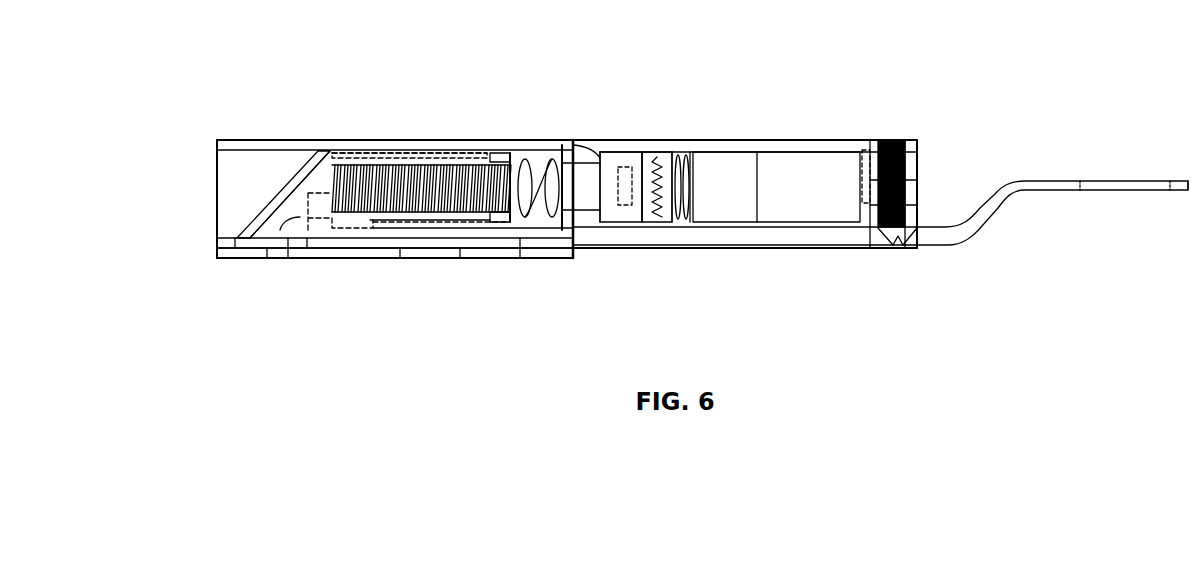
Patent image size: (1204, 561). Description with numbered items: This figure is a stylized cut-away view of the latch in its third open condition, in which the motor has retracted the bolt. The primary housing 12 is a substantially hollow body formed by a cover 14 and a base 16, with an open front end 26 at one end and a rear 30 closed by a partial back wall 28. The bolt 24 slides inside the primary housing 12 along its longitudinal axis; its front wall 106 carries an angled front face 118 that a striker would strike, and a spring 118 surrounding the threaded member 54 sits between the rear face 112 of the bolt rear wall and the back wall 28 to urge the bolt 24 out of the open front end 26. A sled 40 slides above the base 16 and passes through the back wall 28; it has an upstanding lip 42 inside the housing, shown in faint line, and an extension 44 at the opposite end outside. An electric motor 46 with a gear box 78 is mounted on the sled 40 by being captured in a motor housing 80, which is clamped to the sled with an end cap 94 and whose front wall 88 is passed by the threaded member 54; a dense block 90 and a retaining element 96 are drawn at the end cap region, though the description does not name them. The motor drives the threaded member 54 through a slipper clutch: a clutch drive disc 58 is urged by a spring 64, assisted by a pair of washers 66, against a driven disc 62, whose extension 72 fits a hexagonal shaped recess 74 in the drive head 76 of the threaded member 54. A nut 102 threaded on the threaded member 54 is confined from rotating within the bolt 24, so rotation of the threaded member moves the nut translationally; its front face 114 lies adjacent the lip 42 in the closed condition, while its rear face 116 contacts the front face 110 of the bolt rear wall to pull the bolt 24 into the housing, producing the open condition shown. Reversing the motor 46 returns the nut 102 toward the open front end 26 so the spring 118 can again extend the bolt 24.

The primary housing 12 is at (341, 139).
The cover 14 is at (253, 139).
The base 16 is at (227, 260).
The bolt 24 is at (243, 222).
The open front end 26 is at (217, 175).
The partial back wall 28 is at (578, 152).
The rear 30 is at (565, 150).
The sled 40 is at (978, 216).
The upstanding lip 42 is at (305, 228).
The extension 44 is at (970, 200).
The electric motor 46 is at (818, 155).
The threaded member 54 is at (412, 216).
The clutch drive disc 58 is at (670, 222).
The driven disc 62 is at (650, 222).
The spring 64 is at (678, 222).
The washers 66 is at (683, 222).
The extension 72 is at (633, 222).
The hexagonal shaped recess 74 is at (632, 222).
The drive head 76 is at (622, 152).
The gear box 78 is at (702, 150).
The motor housing 80 is at (647, 152).
The front wall 88 is at (546, 230).
The dense plug 90 is at (893, 140).
The end cap 94 is at (922, 162).
The retainer 96 is at (885, 248).
The nut 102 is at (458, 158).
The front wall 106 is at (282, 220).
The front face 110 is at (483, 158).
The rear face 112 is at (518, 158).
The front face 114 is at (425, 158).
The rear face 116 is at (480, 222).
The spring 118 is at (254, 207).